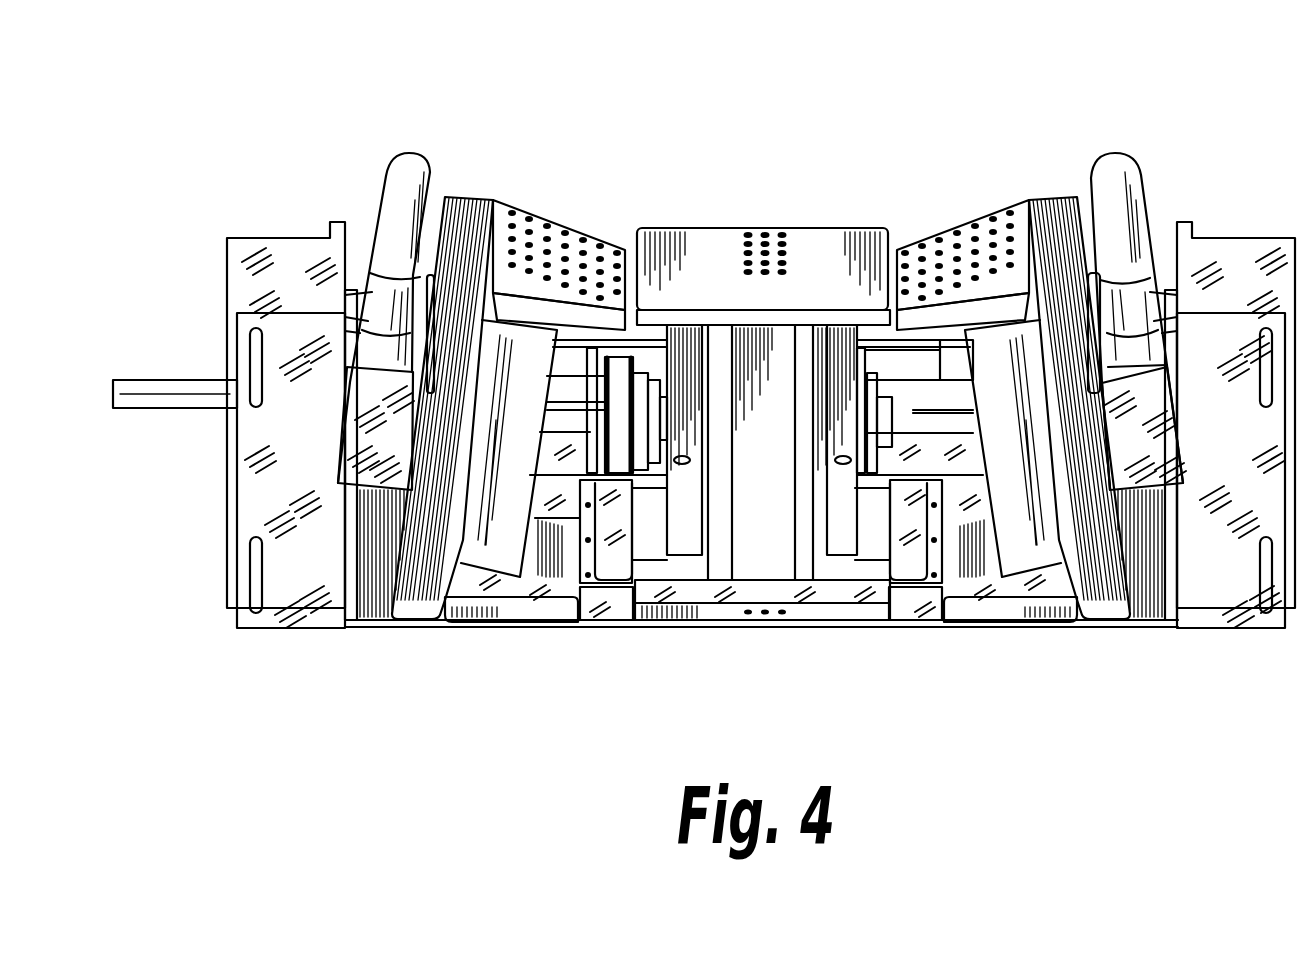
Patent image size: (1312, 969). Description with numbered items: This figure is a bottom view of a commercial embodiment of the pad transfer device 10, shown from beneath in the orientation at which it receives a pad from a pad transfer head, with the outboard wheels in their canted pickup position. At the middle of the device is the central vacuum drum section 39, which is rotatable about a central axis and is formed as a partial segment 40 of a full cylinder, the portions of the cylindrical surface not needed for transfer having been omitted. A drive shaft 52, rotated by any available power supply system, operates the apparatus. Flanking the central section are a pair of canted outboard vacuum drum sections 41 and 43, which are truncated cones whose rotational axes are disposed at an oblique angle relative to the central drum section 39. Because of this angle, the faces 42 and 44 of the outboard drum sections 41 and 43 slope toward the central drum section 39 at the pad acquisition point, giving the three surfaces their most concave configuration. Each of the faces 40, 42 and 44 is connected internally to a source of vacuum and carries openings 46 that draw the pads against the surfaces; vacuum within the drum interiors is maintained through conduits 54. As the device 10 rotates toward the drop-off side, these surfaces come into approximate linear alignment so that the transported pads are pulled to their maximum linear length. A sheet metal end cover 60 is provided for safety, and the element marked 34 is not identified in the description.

The pad transfer device 10 is at (657, 120).
The left handle 34 is at (385, 200).
The central vacuum drum section 39 is at (727, 557).
The partial segment 40 is at (795, 290).
The canted outboard vacuum drum section 41 is at (425, 630).
The face 42 is at (540, 618).
The canted outboard vacuum drum section 43 is at (1113, 618).
The face 44 is at (1050, 615).
The openings 46 is at (933, 240).
The drive shaft 52 is at (140, 410).
The conduits 54 is at (1140, 200).
The sheet metal end cover 60 is at (225, 570).